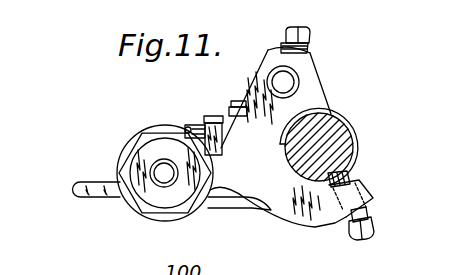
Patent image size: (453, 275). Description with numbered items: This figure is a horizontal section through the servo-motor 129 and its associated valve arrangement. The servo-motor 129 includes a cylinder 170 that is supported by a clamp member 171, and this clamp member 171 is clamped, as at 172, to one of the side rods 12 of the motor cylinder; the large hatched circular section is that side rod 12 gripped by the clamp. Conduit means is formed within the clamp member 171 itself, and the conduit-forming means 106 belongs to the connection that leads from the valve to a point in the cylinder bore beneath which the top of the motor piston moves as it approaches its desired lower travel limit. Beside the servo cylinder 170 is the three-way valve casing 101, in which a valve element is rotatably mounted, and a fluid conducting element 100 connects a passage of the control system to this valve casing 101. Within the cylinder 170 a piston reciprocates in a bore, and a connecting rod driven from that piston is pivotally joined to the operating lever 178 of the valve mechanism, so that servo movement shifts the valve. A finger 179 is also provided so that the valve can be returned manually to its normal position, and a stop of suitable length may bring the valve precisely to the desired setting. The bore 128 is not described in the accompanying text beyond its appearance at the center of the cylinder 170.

The side rod 12 is at (341, 139).
The fluid conducting element 100 is at (200, 126).
The three-way valve casing 101 is at (229, 113).
The conduit-forming means 106 is at (299, 78).
The bore 128 is at (151, 165).
The servo-motor 129 is at (143, 128).
The cylinder 170 is at (141, 212).
The clamp member 171 is at (300, 218).
The clamp 172 is at (348, 175).
The operating lever 178 is at (227, 190).
The finger 179 is at (74, 190).